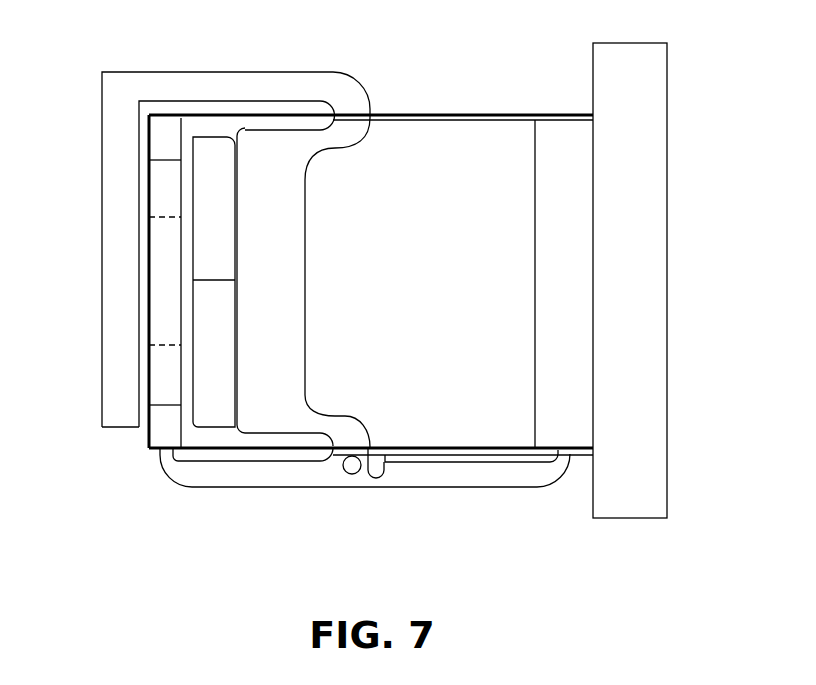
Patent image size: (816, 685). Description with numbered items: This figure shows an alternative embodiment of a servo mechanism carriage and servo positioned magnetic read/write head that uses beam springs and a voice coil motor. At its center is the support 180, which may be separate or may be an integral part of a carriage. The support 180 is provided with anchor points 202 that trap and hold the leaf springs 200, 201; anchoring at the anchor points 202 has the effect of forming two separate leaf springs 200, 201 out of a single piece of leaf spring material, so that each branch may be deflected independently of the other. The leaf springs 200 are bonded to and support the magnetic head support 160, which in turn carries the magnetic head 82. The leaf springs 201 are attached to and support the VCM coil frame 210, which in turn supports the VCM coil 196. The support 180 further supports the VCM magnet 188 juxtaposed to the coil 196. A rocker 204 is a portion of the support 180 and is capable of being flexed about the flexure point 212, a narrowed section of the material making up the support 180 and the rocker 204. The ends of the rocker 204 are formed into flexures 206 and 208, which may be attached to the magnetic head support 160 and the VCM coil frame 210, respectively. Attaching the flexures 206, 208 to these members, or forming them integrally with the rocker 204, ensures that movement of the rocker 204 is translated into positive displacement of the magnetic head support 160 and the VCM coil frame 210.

The magnetic head 82 is at (645, 323).
The magnetic head support 160 is at (562, 178).
The support 180 is at (277, 328).
The VCM magnet 188 is at (218, 345).
The VCM coil 196 is at (165, 375).
The leaf springs 200 is at (405, 115).
The leaf springs 201 is at (220, 112).
The anchor points 202 is at (348, 114).
The rocker 204 is at (510, 482).
The flexure 206 is at (565, 457).
The flexure 208 is at (168, 462).
The VCM coil frame 210 is at (162, 428).
The flexure point 212 is at (365, 472).